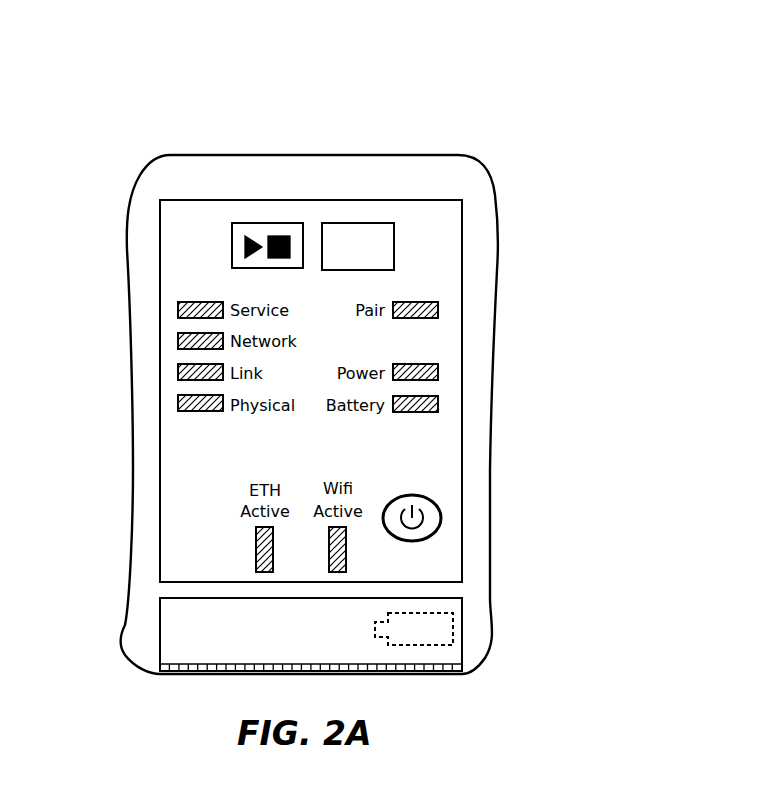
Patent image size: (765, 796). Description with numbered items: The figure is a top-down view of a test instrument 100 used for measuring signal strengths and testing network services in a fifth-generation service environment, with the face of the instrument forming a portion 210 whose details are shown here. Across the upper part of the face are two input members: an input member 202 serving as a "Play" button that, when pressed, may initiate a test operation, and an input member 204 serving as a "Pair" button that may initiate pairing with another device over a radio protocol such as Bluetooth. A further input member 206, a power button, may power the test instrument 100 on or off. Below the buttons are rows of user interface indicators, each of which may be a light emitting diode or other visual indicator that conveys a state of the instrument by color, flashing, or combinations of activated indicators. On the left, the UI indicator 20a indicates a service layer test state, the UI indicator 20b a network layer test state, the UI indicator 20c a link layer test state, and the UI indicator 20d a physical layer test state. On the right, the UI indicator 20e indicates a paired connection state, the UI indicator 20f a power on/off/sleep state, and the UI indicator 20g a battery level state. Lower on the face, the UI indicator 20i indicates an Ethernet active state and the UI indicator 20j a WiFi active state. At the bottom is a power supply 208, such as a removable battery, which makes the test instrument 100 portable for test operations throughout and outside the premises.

The test instrument 100 is at (372, 68).
The input member 202 is at (262, 223).
The input member 204 is at (360, 223).
The portion 210 is at (435, 223).
The UI indicator 20a is at (178, 317).
The UI indicator 20b is at (178, 348).
The UI indicator 20c is at (178, 379).
The UI indicator 20d is at (178, 409).
The UI indicator 20e is at (438, 316).
The UI indicator 20f is at (438, 375).
The UI indicator 20g is at (438, 404).
The UI indicator 20i is at (272, 572).
The UI indicator 20j is at (345, 572).
The input member 206 is at (441, 517).
The power supply 208 is at (453, 626).